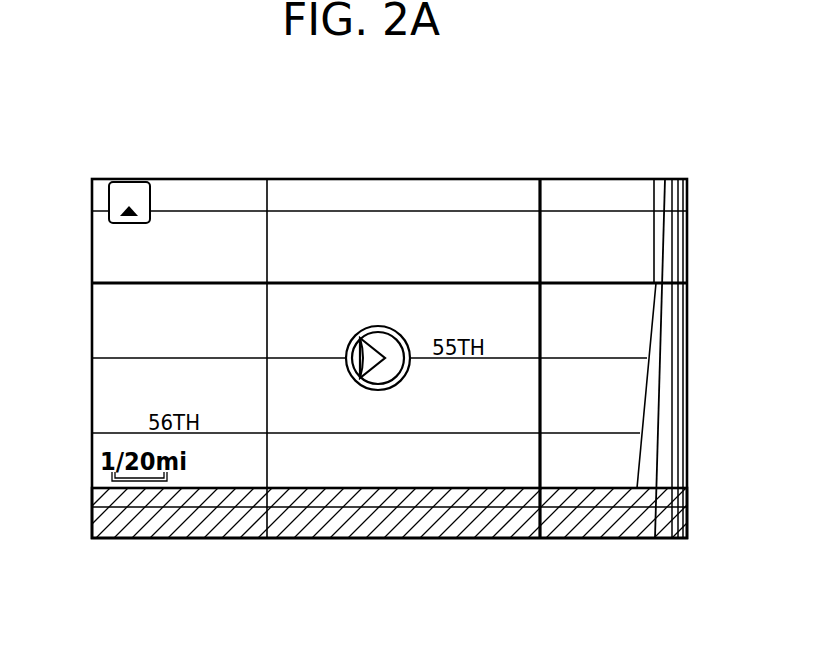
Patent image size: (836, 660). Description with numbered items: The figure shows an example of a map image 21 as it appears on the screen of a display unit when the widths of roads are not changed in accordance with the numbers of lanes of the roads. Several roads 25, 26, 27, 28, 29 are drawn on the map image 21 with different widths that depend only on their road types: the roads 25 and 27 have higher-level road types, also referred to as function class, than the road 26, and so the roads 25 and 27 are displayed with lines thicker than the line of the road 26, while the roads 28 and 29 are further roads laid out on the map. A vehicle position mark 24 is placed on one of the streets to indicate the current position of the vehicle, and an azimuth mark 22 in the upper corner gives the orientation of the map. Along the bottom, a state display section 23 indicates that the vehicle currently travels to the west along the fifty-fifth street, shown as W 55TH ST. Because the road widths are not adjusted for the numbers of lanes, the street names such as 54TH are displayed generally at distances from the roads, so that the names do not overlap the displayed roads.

The map image 21 is at (694, 171).
The azimuth mark 22 is at (109, 197).
The state display section 23 is at (222, 523).
The vehicle position mark 24 is at (408, 335).
The road 25 is at (538, 240).
The road 26 is at (362, 211).
The road 27 is at (312, 282).
The road 28 is at (648, 322).
The road 29 is at (268, 327).